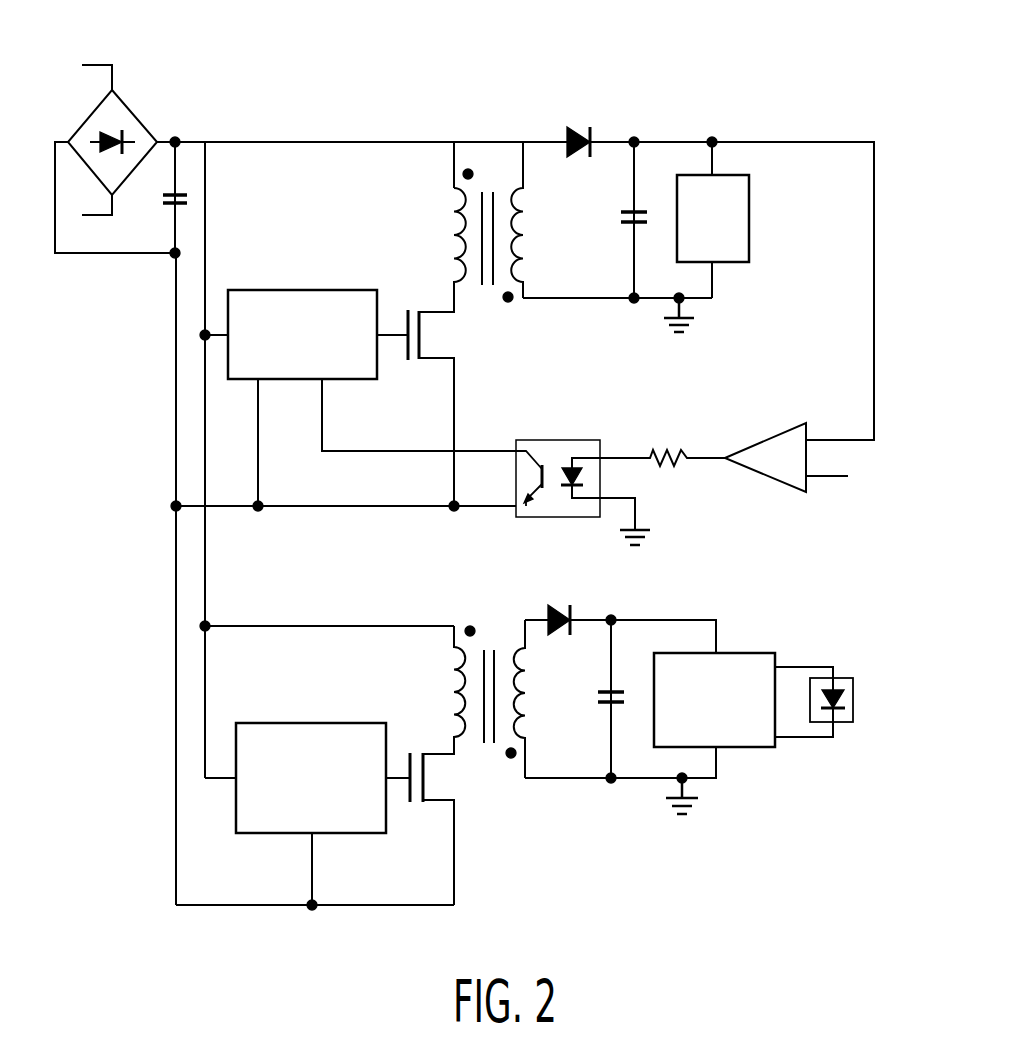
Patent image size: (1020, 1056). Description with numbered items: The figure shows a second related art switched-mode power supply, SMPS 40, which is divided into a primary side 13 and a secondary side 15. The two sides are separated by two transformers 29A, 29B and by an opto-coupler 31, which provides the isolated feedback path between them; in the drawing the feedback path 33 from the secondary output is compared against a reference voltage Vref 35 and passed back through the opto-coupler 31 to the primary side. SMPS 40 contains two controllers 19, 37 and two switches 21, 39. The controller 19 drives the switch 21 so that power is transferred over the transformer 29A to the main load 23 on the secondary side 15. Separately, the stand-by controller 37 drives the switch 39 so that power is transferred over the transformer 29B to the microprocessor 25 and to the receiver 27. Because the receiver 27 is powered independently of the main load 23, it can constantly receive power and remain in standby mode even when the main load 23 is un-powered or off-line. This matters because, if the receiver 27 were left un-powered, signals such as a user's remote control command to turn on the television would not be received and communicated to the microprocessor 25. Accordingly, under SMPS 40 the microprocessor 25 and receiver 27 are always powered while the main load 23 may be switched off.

The primary side 13 is at (293, 93).
The secondary side 15 is at (700, 95).
The controller 19 is at (258, 290).
The switch 21 is at (406, 325).
The main load 23 is at (751, 209).
The microprocessor 25 is at (744, 652).
The receiver 27 is at (848, 723).
The transformer 29A is at (487, 163).
The transformer 29B is at (490, 780).
The opto-coupler 31 is at (552, 439).
The feedback line 33 is at (876, 169).
The reference voltage 35 is at (873, 492).
The controller 37 is at (278, 722).
The switch 39 is at (400, 792).
The SMPS 40 is at (459, 76).